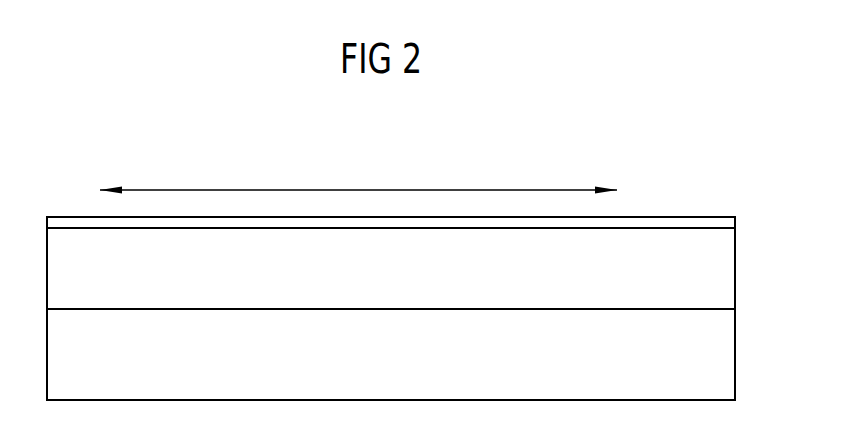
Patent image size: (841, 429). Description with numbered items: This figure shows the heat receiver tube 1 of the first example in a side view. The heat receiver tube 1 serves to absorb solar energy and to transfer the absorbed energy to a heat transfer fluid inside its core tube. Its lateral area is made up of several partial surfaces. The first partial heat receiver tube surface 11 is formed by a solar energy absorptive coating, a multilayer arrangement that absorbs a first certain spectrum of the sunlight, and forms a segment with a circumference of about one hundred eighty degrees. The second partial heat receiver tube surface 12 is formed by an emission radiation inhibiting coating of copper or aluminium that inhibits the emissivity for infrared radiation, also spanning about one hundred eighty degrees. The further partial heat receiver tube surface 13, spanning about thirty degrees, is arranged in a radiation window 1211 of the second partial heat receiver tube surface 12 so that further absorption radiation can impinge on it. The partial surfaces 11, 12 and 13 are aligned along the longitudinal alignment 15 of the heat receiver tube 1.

The heat receiver tube 1 is at (730, 165).
The first partial heat receiver tube surface 11 is at (581, 350).
The second partial heat receiver tube surface 12 is at (581, 272).
The further partial heat receiver tube surface 13 is at (66, 221).
The radiation window 1211 is at (672, 200).
The longitudinal alignment 15 is at (398, 189).